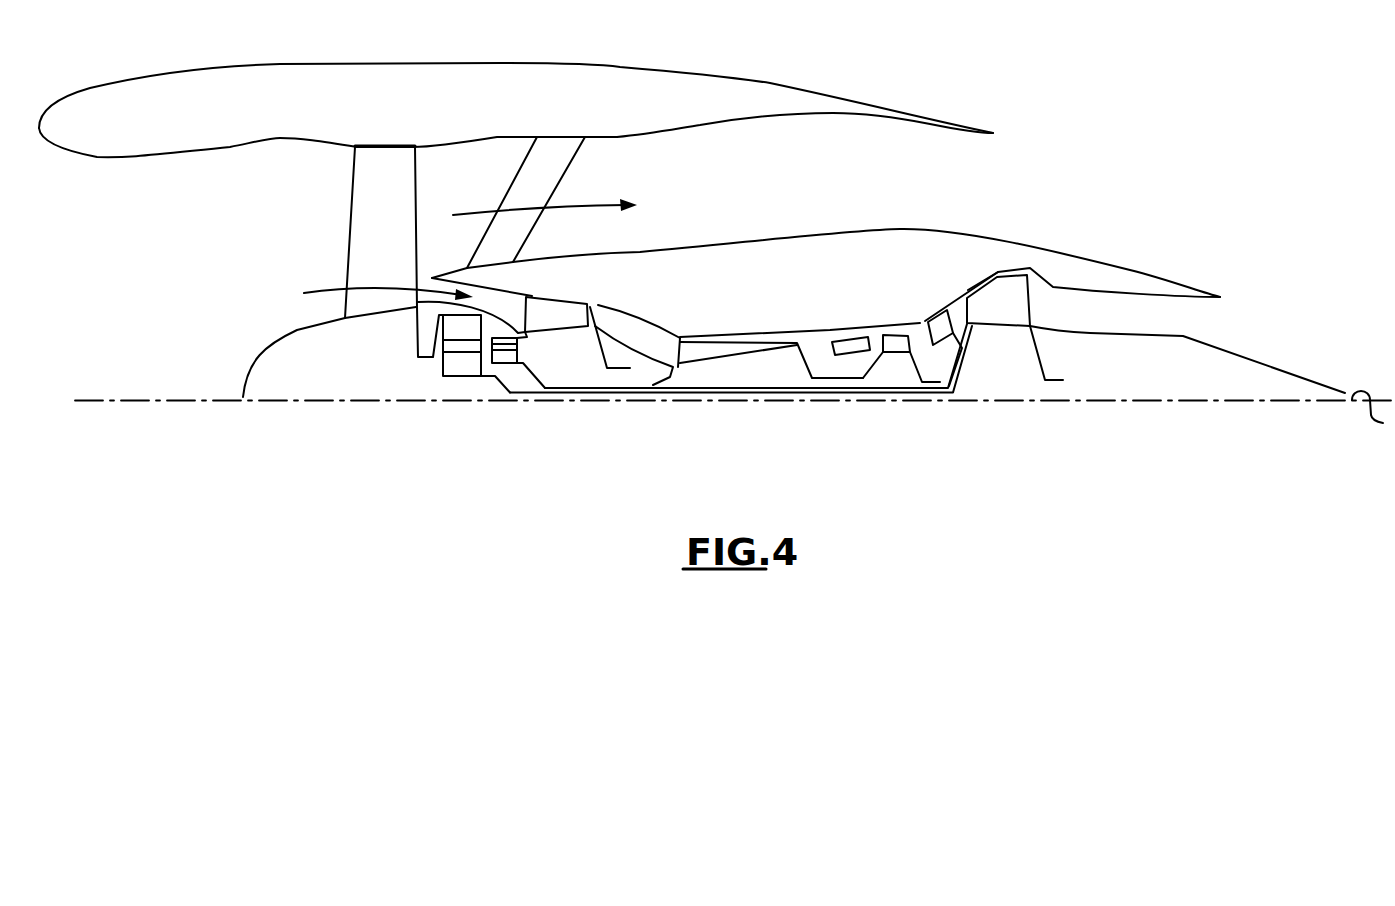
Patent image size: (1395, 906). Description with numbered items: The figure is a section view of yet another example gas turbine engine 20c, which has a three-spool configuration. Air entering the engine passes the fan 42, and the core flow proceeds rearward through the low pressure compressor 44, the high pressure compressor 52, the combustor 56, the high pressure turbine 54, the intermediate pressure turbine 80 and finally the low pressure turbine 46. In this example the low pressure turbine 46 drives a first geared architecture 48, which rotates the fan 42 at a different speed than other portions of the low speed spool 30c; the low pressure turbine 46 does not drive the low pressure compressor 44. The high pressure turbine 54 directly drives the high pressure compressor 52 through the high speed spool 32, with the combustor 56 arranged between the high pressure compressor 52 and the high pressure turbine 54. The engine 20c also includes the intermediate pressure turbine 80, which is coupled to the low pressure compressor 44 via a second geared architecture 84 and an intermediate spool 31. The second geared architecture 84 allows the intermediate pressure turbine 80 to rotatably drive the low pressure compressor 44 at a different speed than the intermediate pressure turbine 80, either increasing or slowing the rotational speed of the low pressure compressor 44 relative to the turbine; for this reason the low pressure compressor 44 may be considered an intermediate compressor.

The gas turbine engine 20c is at (1110, 118).
The fan 42 is at (398, 261).
The low pressure compressor section 44 is at (567, 302).
The low pressure turbine section 46 is at (993, 280).
The geared architecture 48 is at (463, 367).
The high pressure compressor section 52 is at (723, 340).
The high pressure turbine section 54 is at (898, 335).
The combustor 56 is at (848, 338).
The intermediate pressure turbine 80 is at (942, 312).
The second geared architecture 84 is at (517, 353).
The low speed spool 30c is at (742, 392).
The intermediate spool 31 is at (799, 392).
The high speed spool 32 is at (845, 378).